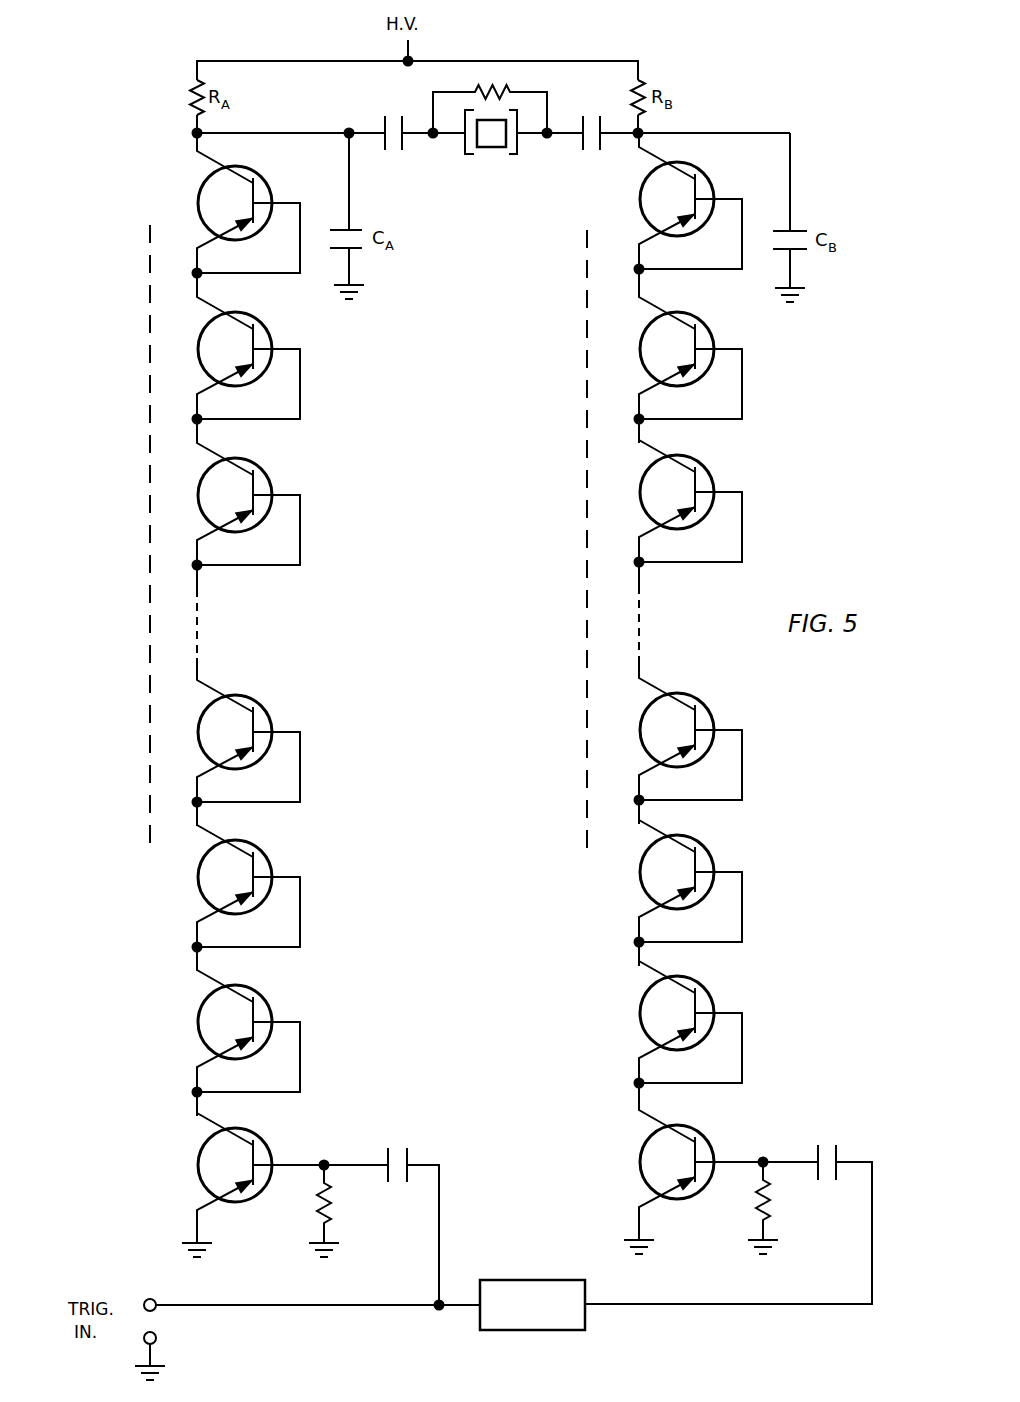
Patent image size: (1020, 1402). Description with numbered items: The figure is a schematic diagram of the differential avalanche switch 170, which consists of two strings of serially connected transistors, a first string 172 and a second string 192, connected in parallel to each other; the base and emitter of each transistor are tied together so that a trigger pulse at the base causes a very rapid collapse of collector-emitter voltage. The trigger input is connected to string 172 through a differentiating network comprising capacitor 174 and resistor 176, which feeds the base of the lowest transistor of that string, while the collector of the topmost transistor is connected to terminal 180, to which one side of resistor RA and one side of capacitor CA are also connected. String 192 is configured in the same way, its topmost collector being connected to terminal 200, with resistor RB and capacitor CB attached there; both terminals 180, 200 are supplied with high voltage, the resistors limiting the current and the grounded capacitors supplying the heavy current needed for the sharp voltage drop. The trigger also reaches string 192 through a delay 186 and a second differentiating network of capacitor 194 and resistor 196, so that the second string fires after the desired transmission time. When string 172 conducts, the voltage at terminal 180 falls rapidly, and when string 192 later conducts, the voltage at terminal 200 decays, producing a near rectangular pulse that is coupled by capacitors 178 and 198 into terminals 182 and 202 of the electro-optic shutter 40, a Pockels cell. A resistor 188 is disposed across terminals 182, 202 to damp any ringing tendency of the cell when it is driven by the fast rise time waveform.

The electro-optic shutter 40 is at (515, 154).
The differential avalanche switch 170 is at (217, 695).
The first string 172 is at (334, 520).
The capacitor 174 is at (390, 1147).
The resistor 176 is at (331, 1204).
The capacitor 178 is at (386, 115).
The terminal 180 is at (197, 133).
The terminal 182 is at (462, 138).
The delay 186 is at (530, 1280).
The resistor 188 is at (482, 88).
The second string 192 is at (550, 454).
The capacitor 194 is at (828, 1146).
The resistor 196 is at (770, 1201).
The capacitor 198 is at (584, 115).
The terminal 200 is at (640, 133).
The terminal 202 is at (521, 147).